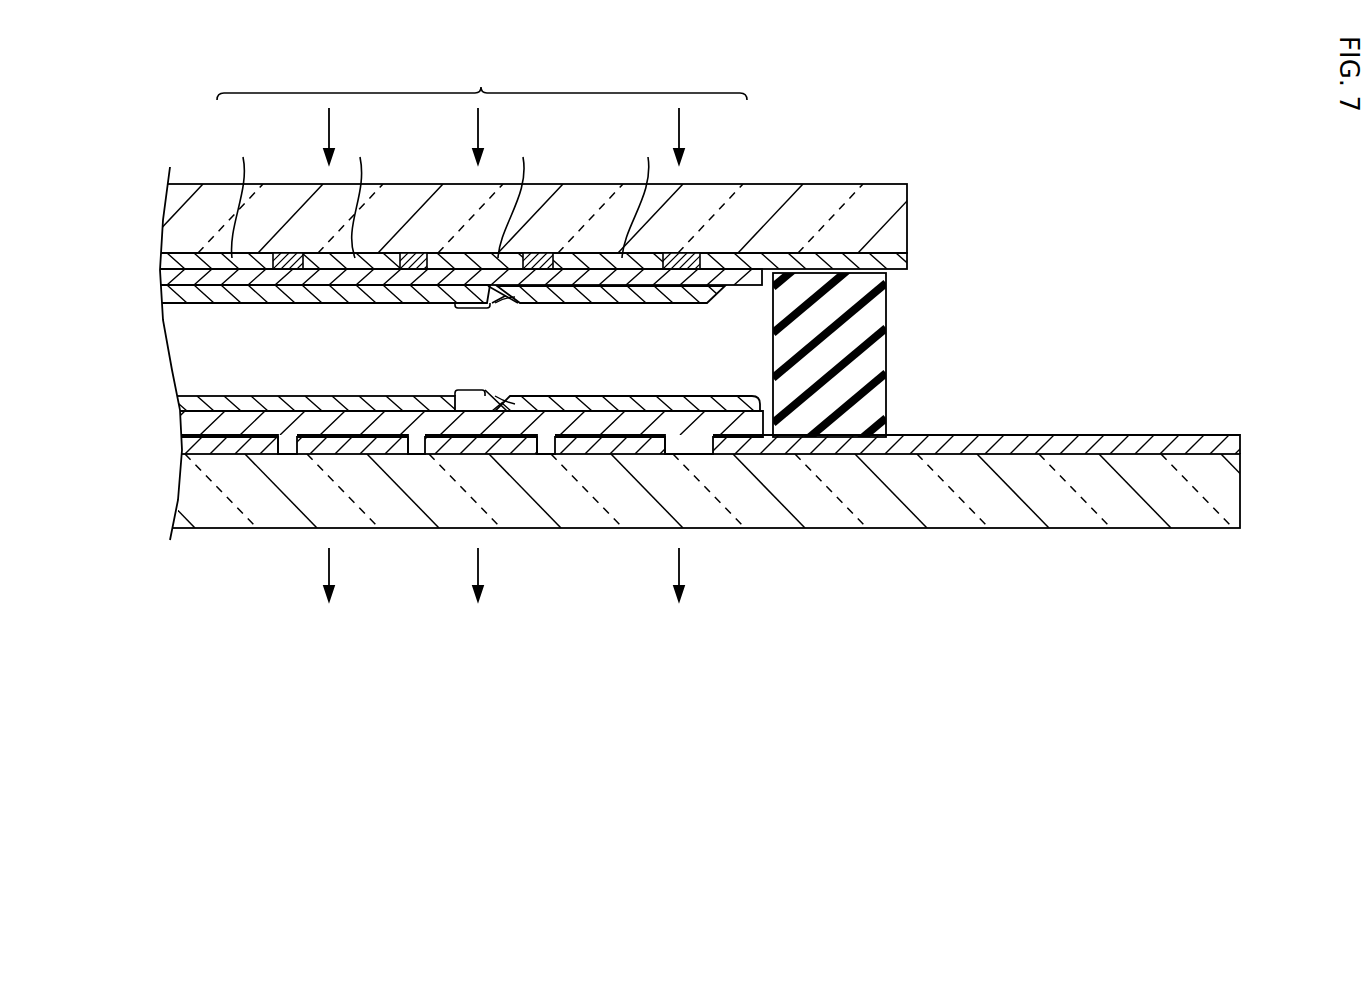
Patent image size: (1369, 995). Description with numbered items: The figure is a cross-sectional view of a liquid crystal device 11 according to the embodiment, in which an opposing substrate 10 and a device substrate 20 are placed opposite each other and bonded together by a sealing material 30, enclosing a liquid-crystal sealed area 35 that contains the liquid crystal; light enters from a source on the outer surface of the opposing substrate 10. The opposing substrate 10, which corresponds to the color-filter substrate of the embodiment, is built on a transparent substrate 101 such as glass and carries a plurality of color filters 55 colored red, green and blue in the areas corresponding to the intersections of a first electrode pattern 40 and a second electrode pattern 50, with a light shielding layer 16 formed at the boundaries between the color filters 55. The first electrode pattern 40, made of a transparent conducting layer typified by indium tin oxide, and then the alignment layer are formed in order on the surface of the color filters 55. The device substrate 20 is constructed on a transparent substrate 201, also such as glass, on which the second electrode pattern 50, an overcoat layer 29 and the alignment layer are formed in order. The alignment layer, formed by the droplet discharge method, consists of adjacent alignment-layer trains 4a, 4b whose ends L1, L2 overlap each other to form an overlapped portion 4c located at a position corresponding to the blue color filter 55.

The liquid crystal device 11 is at (849, 160).
The opposing substrate 10 is at (96, 183).
The device substrate 20 is at (96, 395).
The transparent substrate 101 is at (907, 232).
The transparent substrate 201 is at (1240, 508).
The color filters 55 is at (165, 260).
The light shielding layer 16 is at (494, 199).
The first electrode pattern 40 is at (165, 285).
The alignment-layer train 4a is at (268, 303).
The alignment-layer train 4b is at (642, 303).
The overlapped portion 4c is at (476, 308).
The end of alignment-layer train L1 is at (508, 303).
The end of alignment-layer train L2 is at (450, 306).
The liquid-crystal sealed area 35 is at (178, 360).
The sealing material 30 is at (878, 348).
The overcoat layer 29 is at (188, 425).
The second electrode pattern 50 is at (345, 455).